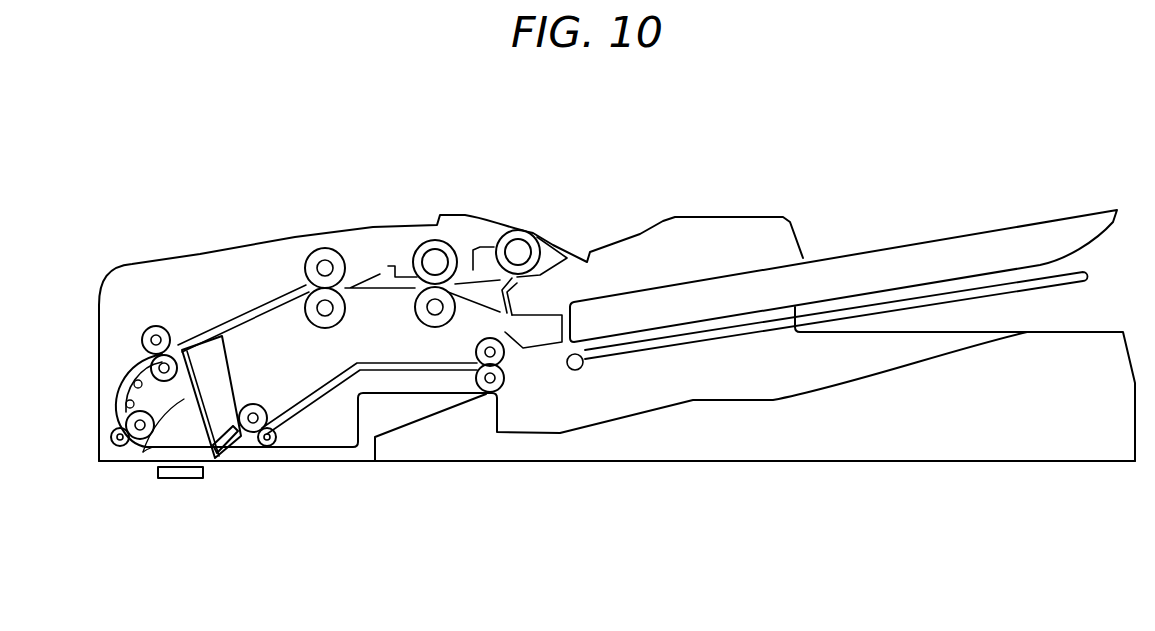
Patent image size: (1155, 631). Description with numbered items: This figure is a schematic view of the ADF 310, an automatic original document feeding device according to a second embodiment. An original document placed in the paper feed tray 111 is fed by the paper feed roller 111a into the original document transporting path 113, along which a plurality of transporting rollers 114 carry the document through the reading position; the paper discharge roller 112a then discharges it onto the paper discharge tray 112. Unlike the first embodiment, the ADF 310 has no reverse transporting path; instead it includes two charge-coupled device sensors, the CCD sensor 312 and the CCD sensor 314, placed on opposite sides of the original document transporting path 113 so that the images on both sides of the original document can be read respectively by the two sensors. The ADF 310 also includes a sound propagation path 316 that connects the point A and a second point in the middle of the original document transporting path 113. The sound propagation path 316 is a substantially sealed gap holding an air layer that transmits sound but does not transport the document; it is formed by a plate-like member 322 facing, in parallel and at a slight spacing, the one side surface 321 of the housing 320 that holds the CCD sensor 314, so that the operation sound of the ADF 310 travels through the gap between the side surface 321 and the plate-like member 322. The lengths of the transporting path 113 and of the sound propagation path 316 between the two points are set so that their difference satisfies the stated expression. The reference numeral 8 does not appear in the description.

The ADF 310 is at (670, 158).
The paper feed tray 111 is at (858, 258).
The paper feed roller 111a is at (520, 228).
The paper discharge tray 112 is at (733, 397).
The paper discharge roller 112a is at (506, 392).
The original document transporting path 113 is at (130, 370).
The transporting rollers 114 is at (152, 326).
The housing 320 is at (214, 366).
The one side surface 321 is at (185, 404).
The plate-like member 322 is at (128, 394).
The CCD sensor 312 is at (167, 478).
The CCD sensor 314 is at (240, 458).
The sound propagation path 316 is at (143, 463).
The sheet 8 is at (214, 465).
The point A is at (173, 332).